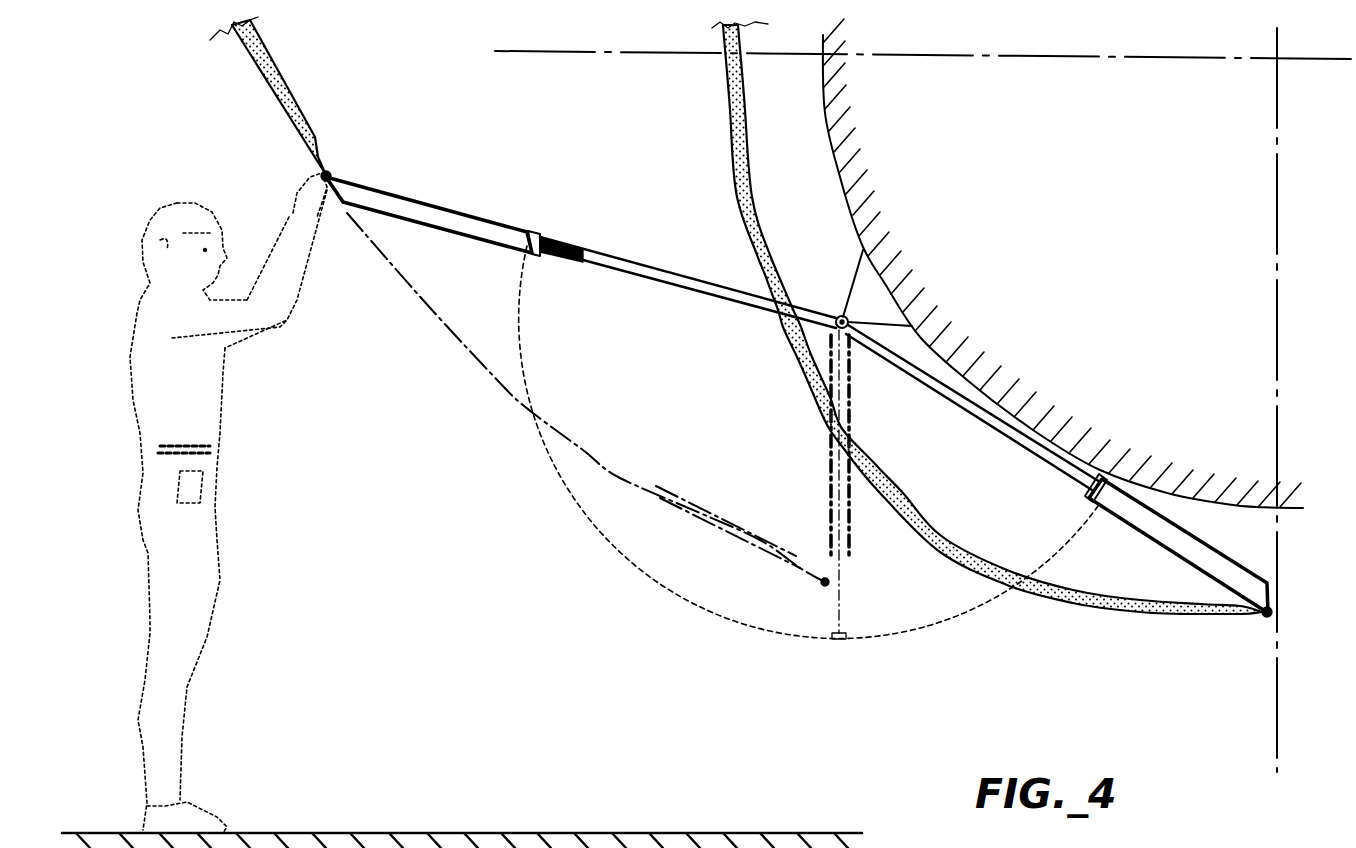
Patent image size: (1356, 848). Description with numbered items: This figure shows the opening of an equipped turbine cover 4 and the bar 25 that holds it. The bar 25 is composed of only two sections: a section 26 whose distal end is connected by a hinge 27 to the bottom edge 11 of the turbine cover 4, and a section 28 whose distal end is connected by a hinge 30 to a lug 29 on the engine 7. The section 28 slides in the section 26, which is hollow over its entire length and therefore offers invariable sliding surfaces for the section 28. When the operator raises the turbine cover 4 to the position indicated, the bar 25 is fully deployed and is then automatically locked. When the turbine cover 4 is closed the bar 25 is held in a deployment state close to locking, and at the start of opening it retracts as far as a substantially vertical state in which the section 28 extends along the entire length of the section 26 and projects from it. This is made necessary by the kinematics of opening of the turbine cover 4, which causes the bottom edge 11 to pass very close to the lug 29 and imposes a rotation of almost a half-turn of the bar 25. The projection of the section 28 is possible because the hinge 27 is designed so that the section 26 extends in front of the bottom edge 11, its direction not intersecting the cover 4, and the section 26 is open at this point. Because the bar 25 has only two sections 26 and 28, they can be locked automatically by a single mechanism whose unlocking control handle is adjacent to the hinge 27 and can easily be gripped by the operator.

The turbine cover 4 is at (250, 79).
The engine 7 is at (832, 140).
The bottom edge 11 is at (332, 188).
The bar 25 is at (612, 285).
The section 26 is at (482, 219).
The hinge 27 is at (331, 174).
The section 28 is at (677, 275).
The lug 29 is at (873, 297).
The hinge 30 is at (841, 316).